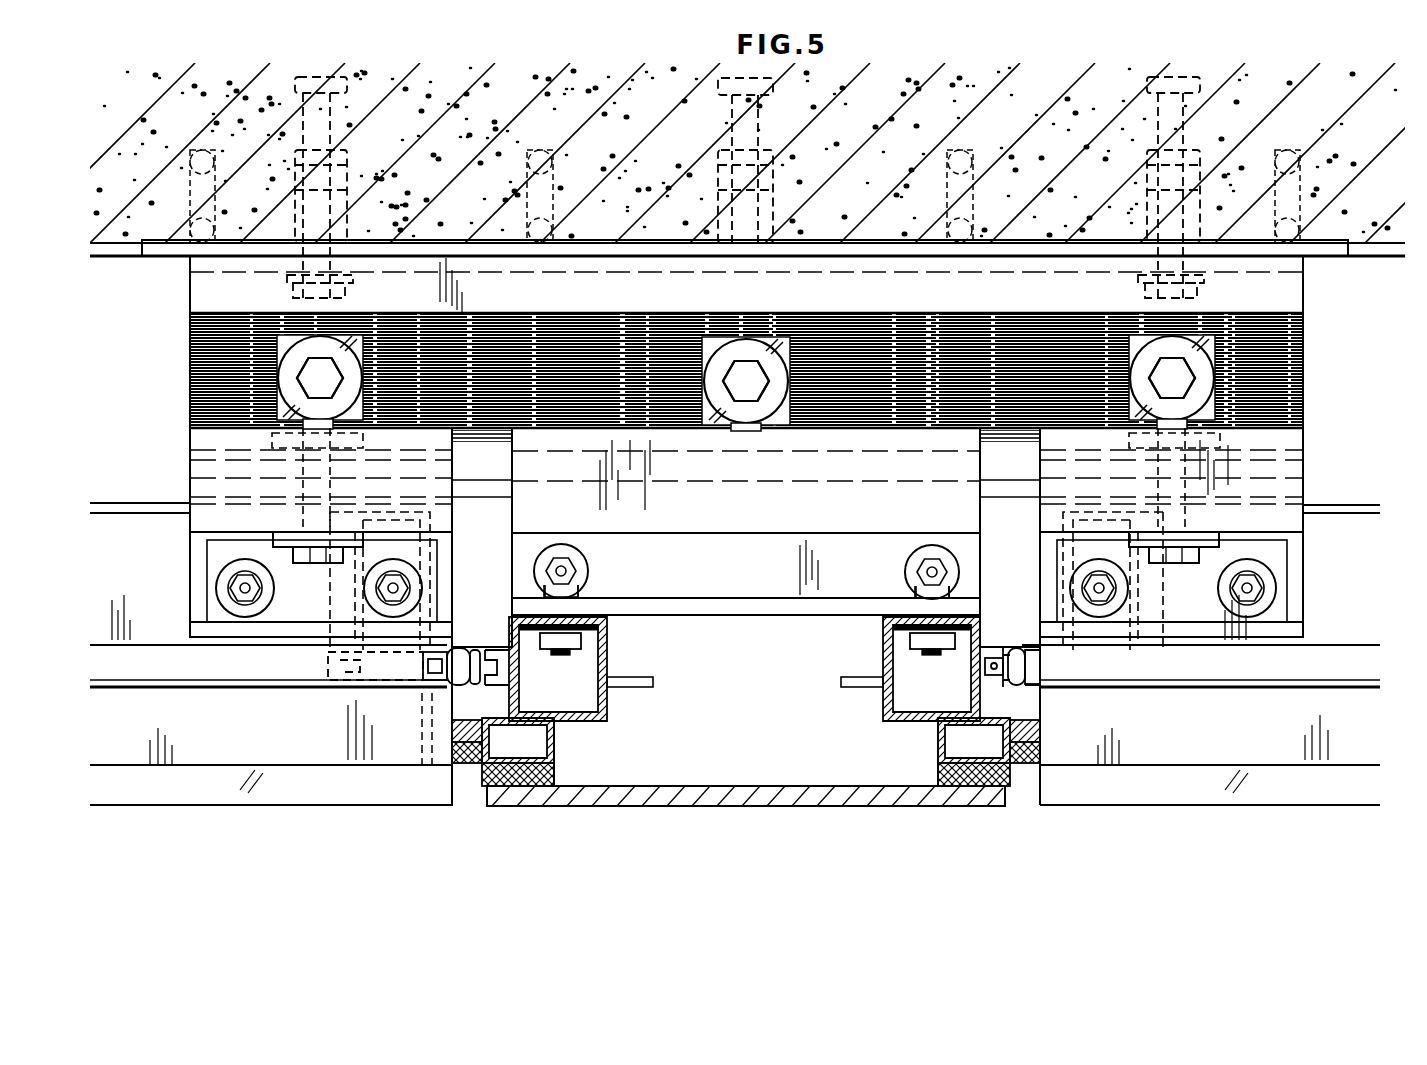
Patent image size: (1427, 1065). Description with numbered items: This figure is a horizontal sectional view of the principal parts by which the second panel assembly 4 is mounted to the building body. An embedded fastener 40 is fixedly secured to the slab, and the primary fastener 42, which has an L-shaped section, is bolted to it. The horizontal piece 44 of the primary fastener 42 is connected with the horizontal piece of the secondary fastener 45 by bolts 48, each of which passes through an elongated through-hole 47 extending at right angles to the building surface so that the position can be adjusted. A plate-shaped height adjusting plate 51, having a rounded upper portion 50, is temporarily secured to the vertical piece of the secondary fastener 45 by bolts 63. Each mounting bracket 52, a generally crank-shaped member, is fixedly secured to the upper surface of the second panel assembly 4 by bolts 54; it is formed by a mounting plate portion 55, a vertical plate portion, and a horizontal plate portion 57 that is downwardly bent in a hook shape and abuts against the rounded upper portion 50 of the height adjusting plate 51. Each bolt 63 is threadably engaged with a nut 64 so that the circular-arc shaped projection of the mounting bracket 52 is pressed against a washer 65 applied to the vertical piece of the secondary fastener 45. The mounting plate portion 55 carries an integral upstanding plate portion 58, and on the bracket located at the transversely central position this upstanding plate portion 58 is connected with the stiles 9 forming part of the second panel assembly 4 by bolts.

The second panel assembly 4 is at (340, 790).
The stiles 9 is at (608, 629).
The embedded fastener 40 is at (902, 290).
The primary fastener 42 is at (640, 292).
The horizontal piece 44 is at (1066, 290).
The secondary fastener 45 is at (492, 490).
The elongated through-hole 47 is at (772, 346).
The bolts 48 is at (740, 368).
The rounded upper portion 50 is at (494, 468).
The height adjusting plate 51 is at (202, 470).
The mounting bracket 52 is at (198, 446).
The bolts 54 is at (228, 588).
The mounting plate portion 55 is at (196, 608).
The horizontal plate portion 57 is at (445, 512).
The upstanding plate portion 58 is at (240, 634).
The bolts 63 is at (318, 566).
The nut 64 is at (280, 434).
The washer 65 is at (580, 592).